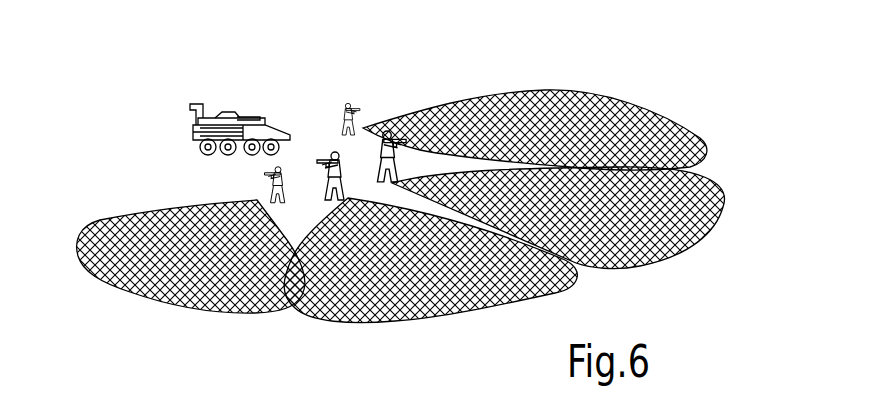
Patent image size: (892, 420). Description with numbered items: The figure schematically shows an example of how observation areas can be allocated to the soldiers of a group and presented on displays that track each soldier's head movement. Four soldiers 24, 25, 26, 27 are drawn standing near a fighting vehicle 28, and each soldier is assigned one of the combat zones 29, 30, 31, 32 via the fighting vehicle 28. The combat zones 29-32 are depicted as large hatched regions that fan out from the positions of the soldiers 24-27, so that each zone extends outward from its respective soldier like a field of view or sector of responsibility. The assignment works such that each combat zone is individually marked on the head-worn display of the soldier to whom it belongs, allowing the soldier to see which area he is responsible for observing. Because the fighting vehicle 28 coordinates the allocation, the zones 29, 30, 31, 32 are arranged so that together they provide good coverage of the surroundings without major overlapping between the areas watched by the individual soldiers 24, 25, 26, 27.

The soldier 24 is at (270, 164).
The soldier 25 is at (337, 150).
The soldier 26 is at (388, 125).
The soldier 27 is at (347, 103).
The fighting vehicle 28 is at (230, 112).
The combat zone 29 is at (157, 293).
The combat zone 30 is at (420, 284).
The combat zone 31 is at (677, 213).
The combat zone 32 is at (657, 111).